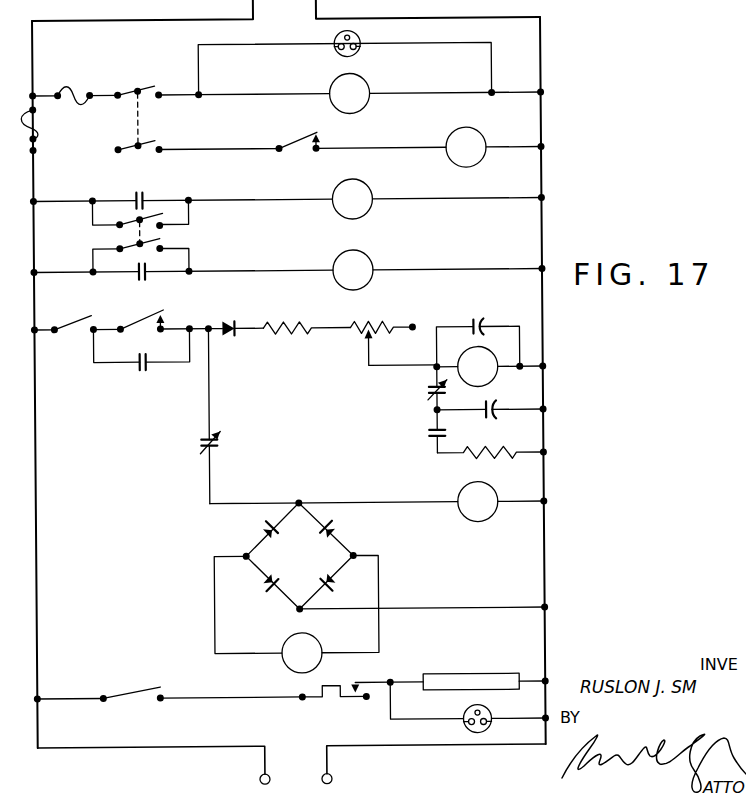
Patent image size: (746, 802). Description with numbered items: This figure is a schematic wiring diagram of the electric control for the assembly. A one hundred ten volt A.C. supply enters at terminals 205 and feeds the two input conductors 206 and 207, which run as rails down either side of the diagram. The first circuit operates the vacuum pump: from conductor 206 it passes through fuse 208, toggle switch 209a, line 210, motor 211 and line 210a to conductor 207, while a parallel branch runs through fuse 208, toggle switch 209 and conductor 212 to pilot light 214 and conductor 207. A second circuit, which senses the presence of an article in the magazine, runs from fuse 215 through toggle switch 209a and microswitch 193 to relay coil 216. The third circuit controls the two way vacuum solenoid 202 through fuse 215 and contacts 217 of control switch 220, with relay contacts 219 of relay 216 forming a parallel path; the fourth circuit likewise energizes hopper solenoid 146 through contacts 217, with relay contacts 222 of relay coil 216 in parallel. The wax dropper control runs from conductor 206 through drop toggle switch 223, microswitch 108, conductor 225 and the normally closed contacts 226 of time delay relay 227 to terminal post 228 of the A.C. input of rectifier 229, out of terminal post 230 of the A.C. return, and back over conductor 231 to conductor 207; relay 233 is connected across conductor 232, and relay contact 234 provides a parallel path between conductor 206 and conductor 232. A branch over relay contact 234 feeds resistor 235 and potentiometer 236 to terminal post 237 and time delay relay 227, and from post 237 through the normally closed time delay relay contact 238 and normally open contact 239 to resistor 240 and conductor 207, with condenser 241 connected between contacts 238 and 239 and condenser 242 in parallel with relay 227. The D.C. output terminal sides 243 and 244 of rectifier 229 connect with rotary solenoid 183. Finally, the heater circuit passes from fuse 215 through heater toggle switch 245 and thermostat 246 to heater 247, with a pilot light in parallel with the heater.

The terminals 205 is at (286, 10).
The input conductor 206 is at (35, 48).
The input conductor 207 is at (543, 54).
The fuse 208 is at (93, 74).
The toggle switch 209 is at (171, 74).
The toggle switch 209a is at (161, 141).
The line 210 is at (244, 74).
The line 210a is at (429, 71).
The motor 211 is at (370, 80).
The conductor 212 is at (269, 50).
The pilot light 214 is at (364, 47).
The fuse 215 is at (39, 132).
The relay coil 216 is at (474, 133).
The contacts 217 is at (123, 222).
The relay contacts 219 is at (151, 196).
The control switch 220 is at (164, 240).
The relay contacts 222 is at (138, 275).
The drop toggle switch 223 is at (76, 321).
The microswitch 108 is at (169, 319).
The microswitch 193 is at (323, 137).
The two way vacuum solenoid 202 is at (371, 186).
The hopper solenoid valve 146 is at (365, 252).
The conductor 225 is at (211, 386).
The normally closed contacts 226 is at (219, 446).
The time delay relay 227 is at (498, 361).
The terminal post 228 is at (298, 503).
The rectifier 229 is at (299, 557).
The terminal post 230 is at (298, 609).
The conductor 231 is at (440, 608).
The conductor 232 is at (380, 503).
The relay 233 is at (459, 519).
The relay contact 234 is at (116, 365).
The resistor 235 is at (308, 303).
The potentiometer 236 is at (388, 316).
The terminal post 237 is at (437, 365).
The time delay relay contact 238 is at (428, 387).
The time delay relay contact 239 is at (428, 431).
The resistor 240 is at (506, 458).
The condenser 241 is at (498, 411).
The condenser 242 is at (475, 320).
The D.C. output terminal side 243 is at (213, 585).
The D.C. output terminal side 244 is at (378, 576).
The heater toggle switch 245 is at (145, 661).
The thermostat 246 is at (370, 723).
The heater 247 is at (458, 676).
The rotary solenoid 183 is at (285, 662).